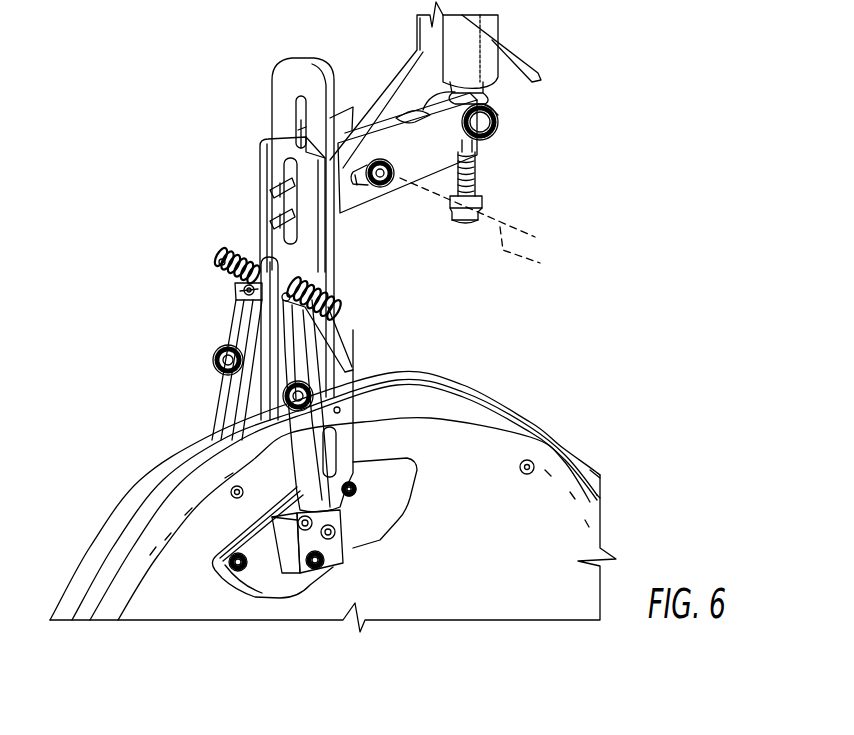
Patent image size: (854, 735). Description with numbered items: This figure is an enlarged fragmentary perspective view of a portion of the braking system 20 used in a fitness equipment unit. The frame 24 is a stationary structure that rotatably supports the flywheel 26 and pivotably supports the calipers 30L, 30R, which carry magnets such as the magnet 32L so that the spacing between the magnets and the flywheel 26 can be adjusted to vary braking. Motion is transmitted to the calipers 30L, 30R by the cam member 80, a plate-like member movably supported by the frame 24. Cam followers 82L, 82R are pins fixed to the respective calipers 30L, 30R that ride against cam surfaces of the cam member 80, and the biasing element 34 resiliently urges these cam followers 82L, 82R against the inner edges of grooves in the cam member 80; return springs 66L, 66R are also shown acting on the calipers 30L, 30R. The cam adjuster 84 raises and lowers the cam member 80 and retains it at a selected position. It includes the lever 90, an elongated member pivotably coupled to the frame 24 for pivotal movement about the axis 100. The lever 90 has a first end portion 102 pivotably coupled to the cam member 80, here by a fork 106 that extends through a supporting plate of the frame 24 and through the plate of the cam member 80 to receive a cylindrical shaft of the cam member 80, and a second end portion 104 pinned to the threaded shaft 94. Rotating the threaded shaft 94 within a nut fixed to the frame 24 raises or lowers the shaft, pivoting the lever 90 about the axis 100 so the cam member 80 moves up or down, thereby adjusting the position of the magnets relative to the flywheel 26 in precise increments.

The braking system 20 is at (642, 50).
The frame 24 is at (395, 80).
The flywheel 26 is at (547, 443).
The caliper 30L is at (305, 428).
The caliper 30R is at (213, 410).
The magnet 32L is at (240, 572).
The biasing element 34 is at (214, 256).
The left return spring 66L is at (333, 293).
The right return spring 66R is at (245, 265).
The cam member 80 is at (267, 150).
The cam follower 82L is at (292, 312).
The cam follower 82R is at (247, 288).
The cam adjuster 84 is at (489, 151).
The lever 90 is at (372, 197).
The threaded shaft 94 is at (478, 172).
The axis 100 is at (496, 243).
The first end portion 102 is at (277, 188).
The second end portion 104 is at (503, 116).
The fork 106 is at (277, 223).